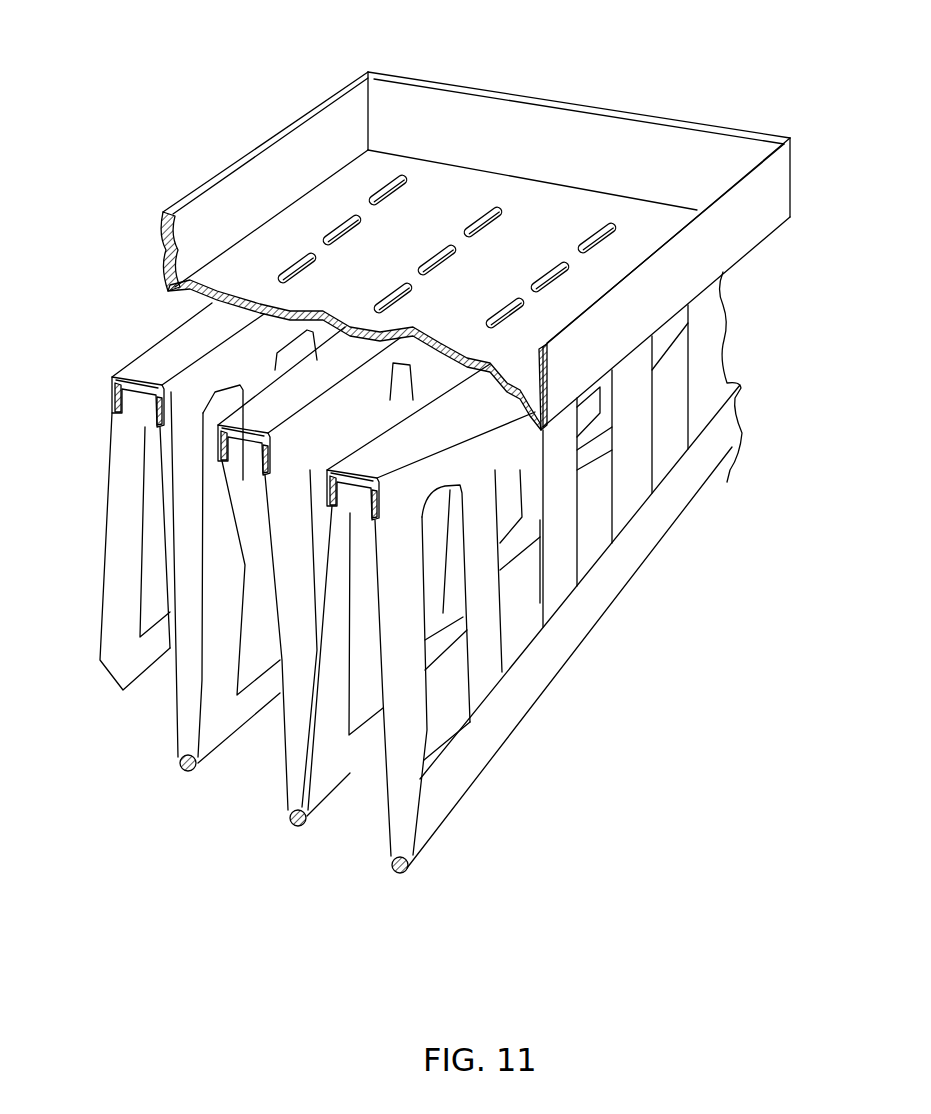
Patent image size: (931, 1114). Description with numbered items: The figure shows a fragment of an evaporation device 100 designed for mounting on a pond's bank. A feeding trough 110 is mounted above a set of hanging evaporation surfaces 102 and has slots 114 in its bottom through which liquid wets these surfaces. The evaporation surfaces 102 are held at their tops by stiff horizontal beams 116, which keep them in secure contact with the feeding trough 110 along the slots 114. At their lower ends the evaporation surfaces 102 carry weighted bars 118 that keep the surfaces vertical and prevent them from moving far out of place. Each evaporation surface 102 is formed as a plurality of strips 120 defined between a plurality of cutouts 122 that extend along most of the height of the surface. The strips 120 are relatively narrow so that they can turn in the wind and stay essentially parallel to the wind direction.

The evaporation device 100 is at (448, 460).
The evaporation surfaces 102 is at (405, 746).
The feeding trough 110 is at (778, 193).
The slots 114 is at (601, 236).
The stiff horizontal beams 116 is at (327, 487).
The weighted bars 118 is at (183, 769).
The strips 120 is at (625, 457).
The cutouts 122 is at (520, 607).